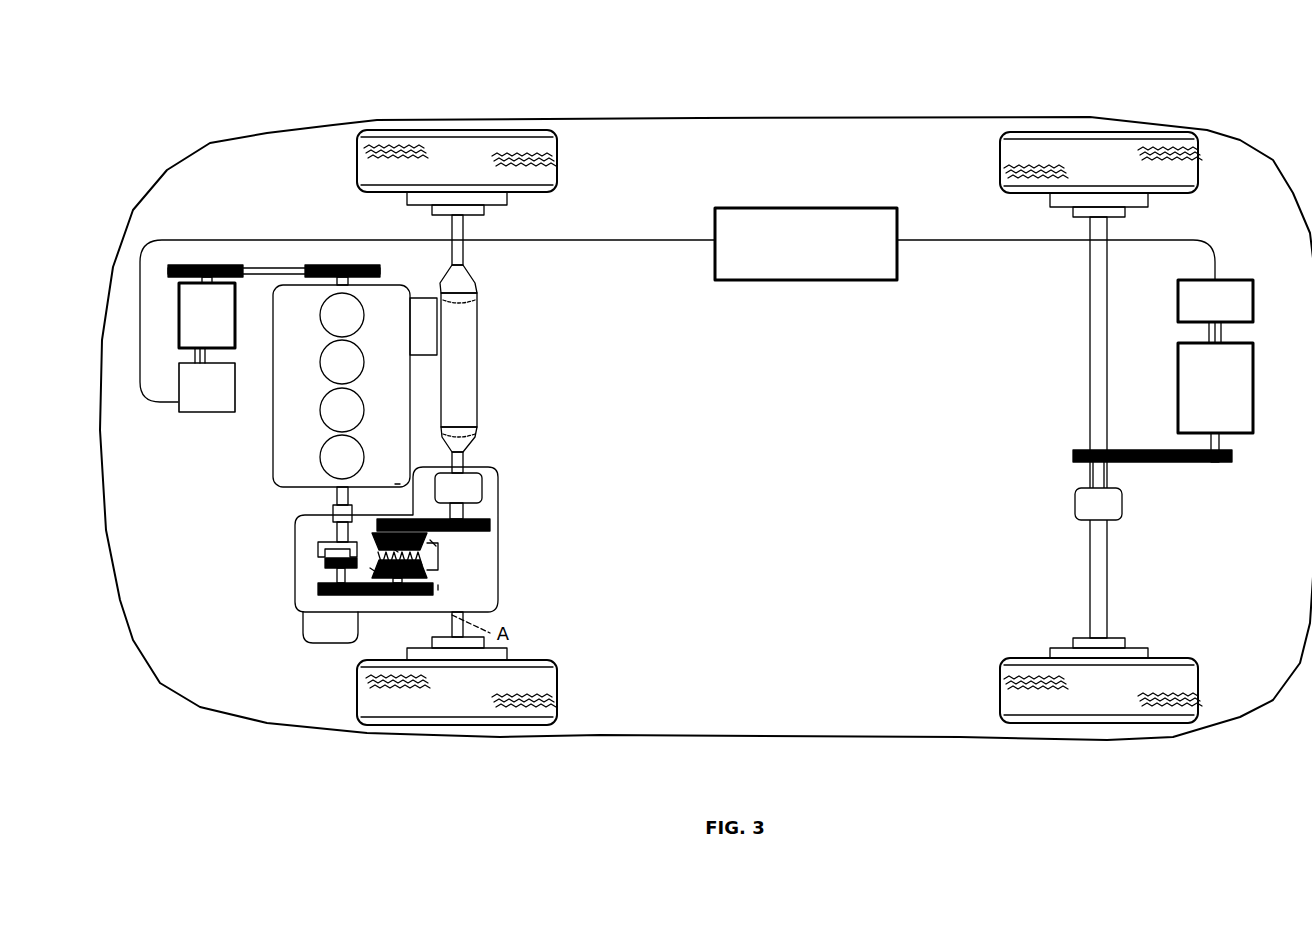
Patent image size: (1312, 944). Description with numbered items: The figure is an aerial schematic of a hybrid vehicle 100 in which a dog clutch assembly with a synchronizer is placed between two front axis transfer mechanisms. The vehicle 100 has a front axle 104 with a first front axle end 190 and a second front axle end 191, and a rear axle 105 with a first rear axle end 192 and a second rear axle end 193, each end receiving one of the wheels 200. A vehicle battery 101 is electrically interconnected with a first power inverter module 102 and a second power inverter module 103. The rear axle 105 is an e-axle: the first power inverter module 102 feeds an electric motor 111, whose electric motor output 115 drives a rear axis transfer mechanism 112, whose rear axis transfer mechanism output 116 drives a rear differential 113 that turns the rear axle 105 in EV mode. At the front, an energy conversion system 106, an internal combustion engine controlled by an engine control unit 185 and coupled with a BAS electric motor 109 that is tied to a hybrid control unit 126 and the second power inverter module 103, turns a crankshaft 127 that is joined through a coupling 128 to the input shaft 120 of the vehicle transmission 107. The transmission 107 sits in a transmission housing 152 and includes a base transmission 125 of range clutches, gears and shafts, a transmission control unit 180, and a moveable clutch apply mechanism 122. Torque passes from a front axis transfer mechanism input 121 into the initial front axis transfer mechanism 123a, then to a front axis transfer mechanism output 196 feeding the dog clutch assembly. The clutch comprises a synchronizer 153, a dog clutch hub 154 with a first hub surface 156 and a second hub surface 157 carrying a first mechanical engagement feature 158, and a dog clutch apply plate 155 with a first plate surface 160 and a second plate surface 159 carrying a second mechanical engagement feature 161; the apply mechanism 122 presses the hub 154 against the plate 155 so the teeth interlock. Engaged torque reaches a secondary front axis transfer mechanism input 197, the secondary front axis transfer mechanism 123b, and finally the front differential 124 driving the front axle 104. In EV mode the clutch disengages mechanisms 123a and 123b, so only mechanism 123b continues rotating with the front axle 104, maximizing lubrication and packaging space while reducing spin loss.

The hybrid vehicle 100 is at (307, 112).
The wheels 200 is at (463, 155).
The first front axle end 190 is at (497, 198).
The second front axle end 191 is at (500, 649).
The first rear axle end 192 is at (1058, 202).
The second rear axle end 193 is at (1134, 652).
The front axle 104 is at (462, 250).
The engine control unit 185 is at (427, 327).
The vehicle battery 101 is at (806, 244).
The BAS electric motor 109 is at (274, 306).
The second power inverter module 103 is at (172, 396).
The hybrid control unit 126 is at (215, 412).
The energy conversion system 106 is at (355, 386).
The vehicle transmission 107 is at (558, 603).
The transmission control unit 180 is at (303, 633).
The front differential 124 is at (470, 485).
The secondary front axis transfer mechanism 123b is at (497, 523).
The moveable clutch apply mechanism 122 is at (498, 533).
The crankshaft 127 is at (337, 497).
The coupling 128 is at (333, 513).
The input shaft 120 is at (323, 532).
The base transmission 125 is at (318, 548).
The transmission housing 152 is at (322, 565).
The front axis transfer mechanism input 121 is at (318, 575).
The initial front axis transfer mechanism 123a is at (377, 597).
The dog clutch apply plate 155 is at (437, 550).
The second hub surface 157 is at (435, 568).
The first hub surface 156 is at (430, 578).
The synchronizer 153 is at (440, 557).
The dog clutch hub 154 is at (437, 587).
The front axis transfer mechanism output 196 is at (440, 590).
The secondary front axis transfer mechanism input 197 is at (437, 544).
The first mechanical engagement feature 158 is at (370, 570).
The second plate surface 159 is at (385, 540).
The first plate surface 160 is at (397, 487).
The second mechanical engagement feature 161 is at (395, 550).
The rear axle 105 is at (1095, 372).
The electric motor output 115 is at (1218, 443).
The rear axis transfer mechanism output 116 is at (1108, 476).
The rear differential 113 is at (1084, 506).
The first power inverter module 102 is at (1215, 311).
The electric motor 111 is at (1215, 388).
The rear axis transfer mechanism 112 is at (1213, 464).